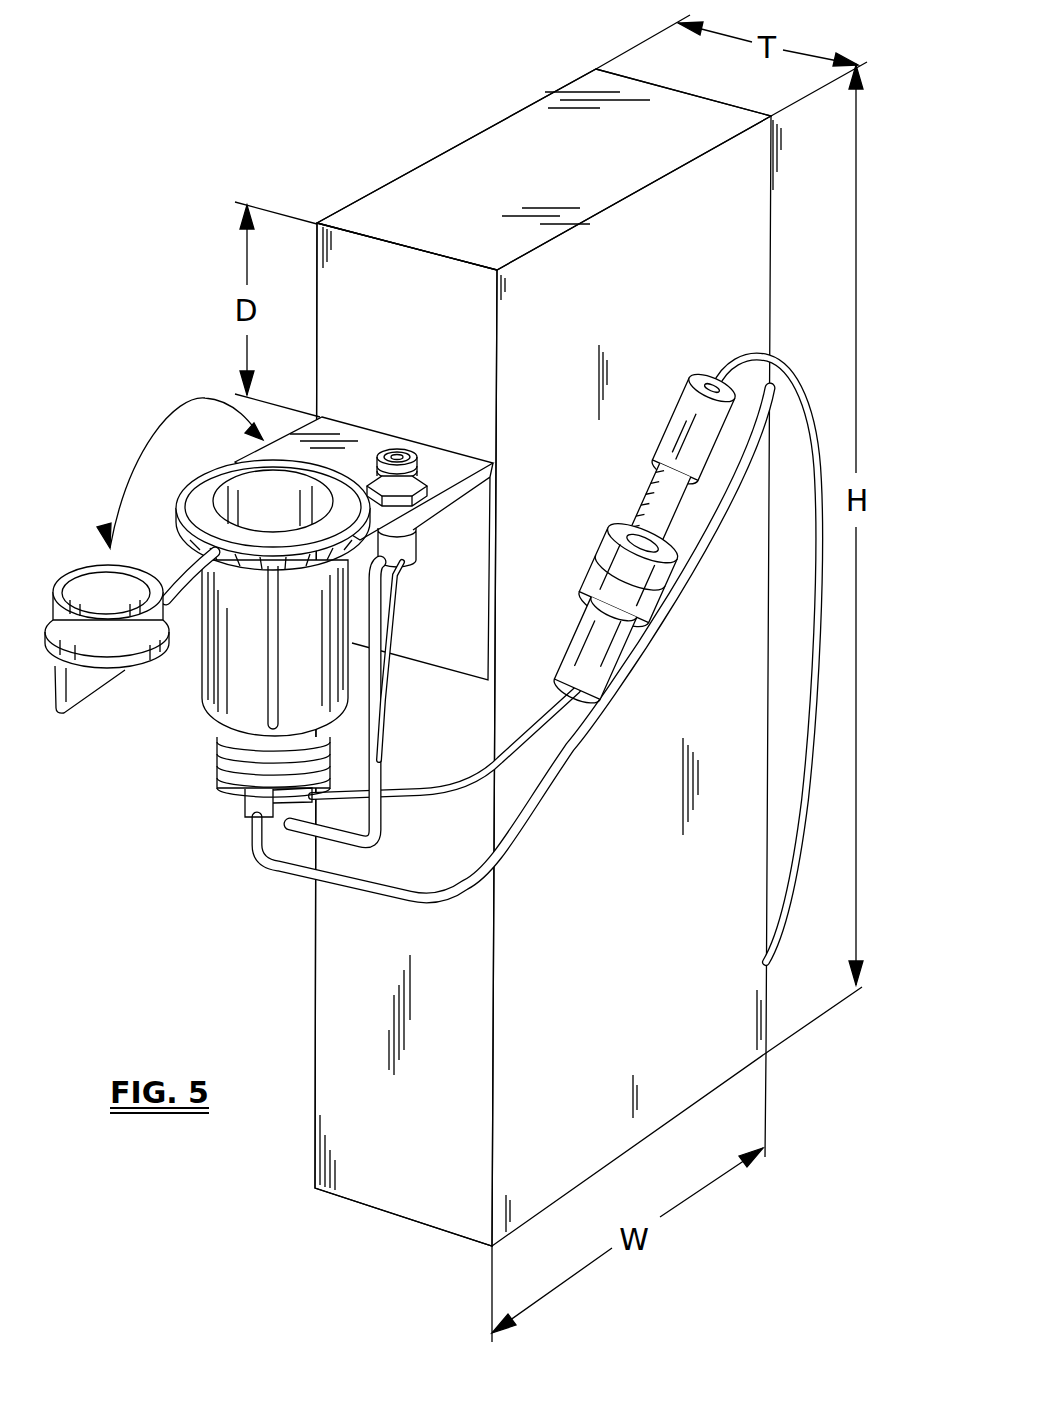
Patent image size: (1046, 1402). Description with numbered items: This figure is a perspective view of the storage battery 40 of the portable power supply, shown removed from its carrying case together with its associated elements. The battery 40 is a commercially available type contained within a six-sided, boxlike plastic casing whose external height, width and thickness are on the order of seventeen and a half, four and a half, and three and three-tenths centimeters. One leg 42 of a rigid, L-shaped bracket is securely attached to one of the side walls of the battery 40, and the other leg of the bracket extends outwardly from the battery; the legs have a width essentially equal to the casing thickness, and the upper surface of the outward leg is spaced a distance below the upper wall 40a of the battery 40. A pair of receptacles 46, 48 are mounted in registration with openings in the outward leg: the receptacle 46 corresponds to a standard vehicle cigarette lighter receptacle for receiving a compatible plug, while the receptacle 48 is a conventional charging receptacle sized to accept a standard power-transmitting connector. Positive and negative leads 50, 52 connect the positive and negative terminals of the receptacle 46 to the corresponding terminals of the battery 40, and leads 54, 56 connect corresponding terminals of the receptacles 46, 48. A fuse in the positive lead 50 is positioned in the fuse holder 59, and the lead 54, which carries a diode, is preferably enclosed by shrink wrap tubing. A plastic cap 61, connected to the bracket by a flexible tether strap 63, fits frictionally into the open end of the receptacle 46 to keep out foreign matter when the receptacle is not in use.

The storage battery 40 is at (770, 227).
The upper wall 40a is at (453, 147).
The leg 42 is at (463, 565).
The receptacle 46 is at (225, 770).
The receptacle 48 is at (490, 483).
The positive lead 50 is at (255, 858).
The negative lead 52 is at (737, 480).
The lead 54 is at (383, 827).
The lead 56 is at (386, 680).
The fuse holder 59 is at (718, 380).
The plastic cap 61 is at (107, 563).
The flexible tether strap 63 is at (168, 665).